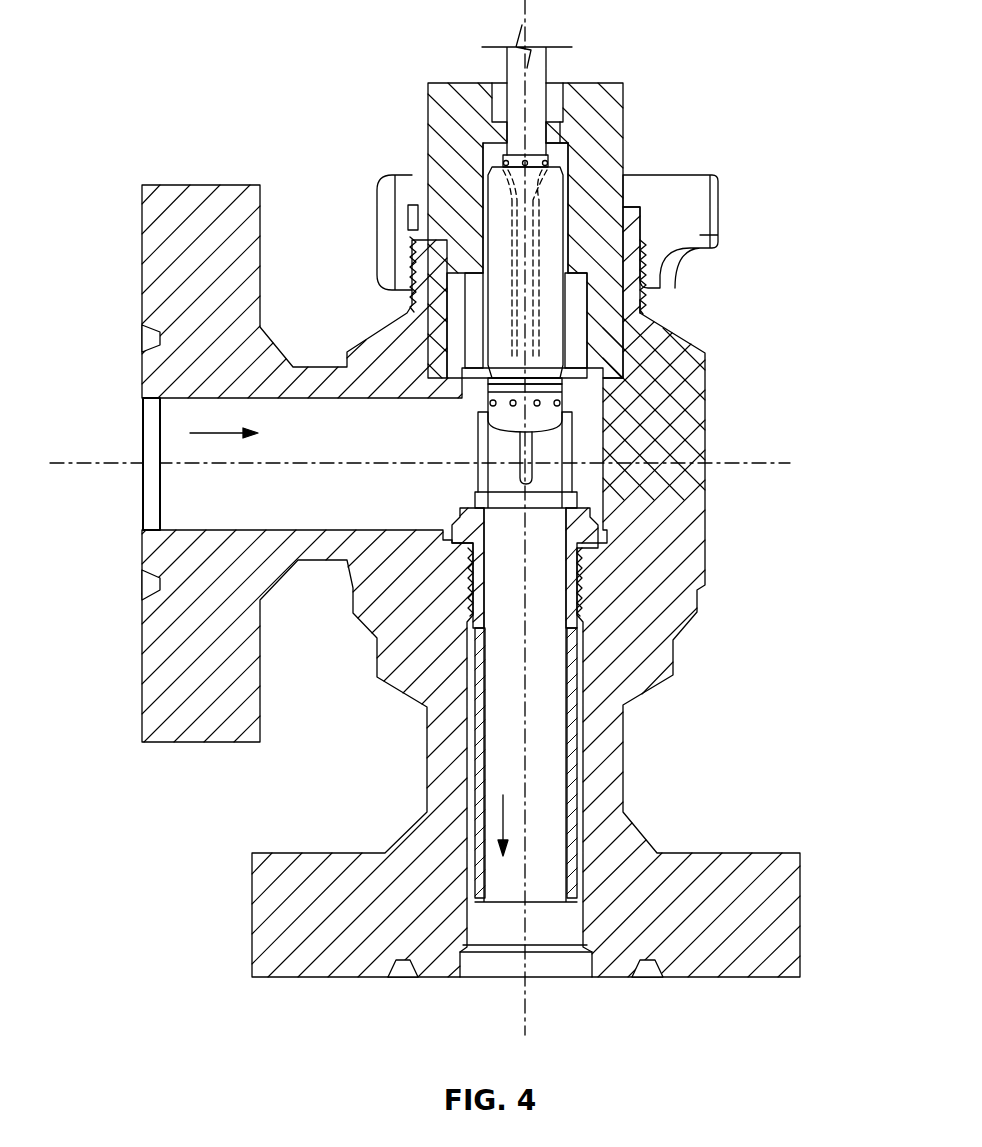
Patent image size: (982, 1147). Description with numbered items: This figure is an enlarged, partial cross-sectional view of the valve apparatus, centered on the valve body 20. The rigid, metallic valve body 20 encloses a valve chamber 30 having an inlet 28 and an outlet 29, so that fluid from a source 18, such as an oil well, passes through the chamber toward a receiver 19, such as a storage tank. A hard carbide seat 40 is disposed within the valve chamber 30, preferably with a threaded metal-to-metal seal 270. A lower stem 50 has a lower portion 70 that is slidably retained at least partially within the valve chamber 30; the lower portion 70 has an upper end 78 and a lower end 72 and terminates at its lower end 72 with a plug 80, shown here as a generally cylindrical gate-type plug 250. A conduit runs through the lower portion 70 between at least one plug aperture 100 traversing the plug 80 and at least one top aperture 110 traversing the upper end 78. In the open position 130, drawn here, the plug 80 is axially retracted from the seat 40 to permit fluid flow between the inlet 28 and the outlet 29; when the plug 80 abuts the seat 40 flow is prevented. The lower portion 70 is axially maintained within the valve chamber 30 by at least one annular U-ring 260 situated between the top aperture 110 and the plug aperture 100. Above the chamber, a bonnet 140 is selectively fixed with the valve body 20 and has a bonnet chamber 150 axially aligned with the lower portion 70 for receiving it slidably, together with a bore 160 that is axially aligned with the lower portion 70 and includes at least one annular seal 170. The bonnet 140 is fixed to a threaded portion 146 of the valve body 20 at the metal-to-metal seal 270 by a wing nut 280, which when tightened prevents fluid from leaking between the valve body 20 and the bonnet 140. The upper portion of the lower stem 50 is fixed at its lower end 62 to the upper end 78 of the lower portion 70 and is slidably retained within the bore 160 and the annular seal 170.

The source 18 is at (146, 457).
The receiver 19 is at (552, 990).
The valve body 20 is at (697, 432).
The inlet 28 is at (150, 398).
The outlet 29 is at (592, 963).
The valve chamber 30 is at (447, 388).
The seat 40 is at (567, 498).
The lower stem 50 is at (492, 192).
The lower end 62 is at (497, 128).
The lower portion 70 is at (497, 243).
The lower end 72 is at (552, 348).
The upper end 78 is at (480, 152).
The plug 80 is at (547, 413).
The plug aperture 100 is at (560, 403).
The top aperture 110 is at (560, 147).
The open position 130 is at (448, 404).
The bonnet 140 is at (600, 175).
The threaded portion 146 is at (642, 298).
The bonnet chamber 150 is at (553, 165).
The bore 160 is at (545, 102).
The annular seal 170 is at (548, 92).
The gate-type plug 250 is at (490, 413).
The annular U-ring 260 is at (575, 340).
The metal-to-metal seal 270 is at (415, 228).
The wing nut 280 is at (718, 230).